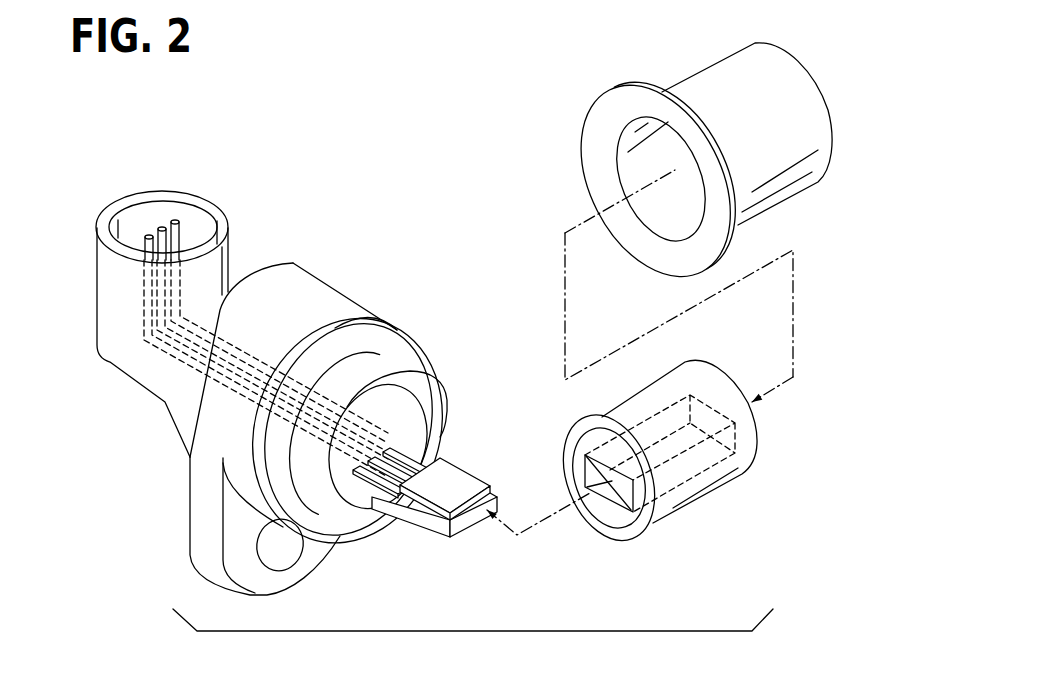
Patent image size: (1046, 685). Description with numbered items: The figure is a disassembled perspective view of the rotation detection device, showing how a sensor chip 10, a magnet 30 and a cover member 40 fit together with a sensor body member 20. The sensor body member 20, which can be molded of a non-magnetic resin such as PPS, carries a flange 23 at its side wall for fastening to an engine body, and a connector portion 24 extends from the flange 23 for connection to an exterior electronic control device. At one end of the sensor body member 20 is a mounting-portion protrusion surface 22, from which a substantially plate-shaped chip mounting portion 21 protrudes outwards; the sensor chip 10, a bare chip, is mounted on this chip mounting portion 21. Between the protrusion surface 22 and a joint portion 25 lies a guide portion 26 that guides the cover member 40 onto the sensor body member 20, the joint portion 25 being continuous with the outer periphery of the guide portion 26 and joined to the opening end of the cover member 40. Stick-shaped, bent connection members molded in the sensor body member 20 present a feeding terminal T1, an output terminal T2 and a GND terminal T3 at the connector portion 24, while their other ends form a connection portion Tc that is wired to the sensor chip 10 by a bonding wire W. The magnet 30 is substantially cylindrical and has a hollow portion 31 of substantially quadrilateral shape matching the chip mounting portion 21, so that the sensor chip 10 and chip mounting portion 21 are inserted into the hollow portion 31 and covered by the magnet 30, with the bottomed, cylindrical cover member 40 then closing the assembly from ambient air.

The sensor chip 10 is at (472, 478).
The sensor body member 20 is at (376, 317).
The chip mounting portion 21 is at (428, 518).
The mounting-portion protrusion surface 22 is at (413, 413).
The flange 23 is at (203, 547).
The connector portion 24 is at (101, 345).
The joint portion 25 is at (413, 347).
The guide portion 26 is at (410, 373).
The magnet 30 is at (720, 478).
The hollow portion 31 is at (652, 422).
The cover member 40 is at (786, 197).
The bonding wire W is at (418, 457).
The connection portion Tc is at (376, 486).
The feeding terminal T1 is at (147, 236).
The output terminal T2 is at (162, 227).
The GND terminal T3 is at (175, 222).